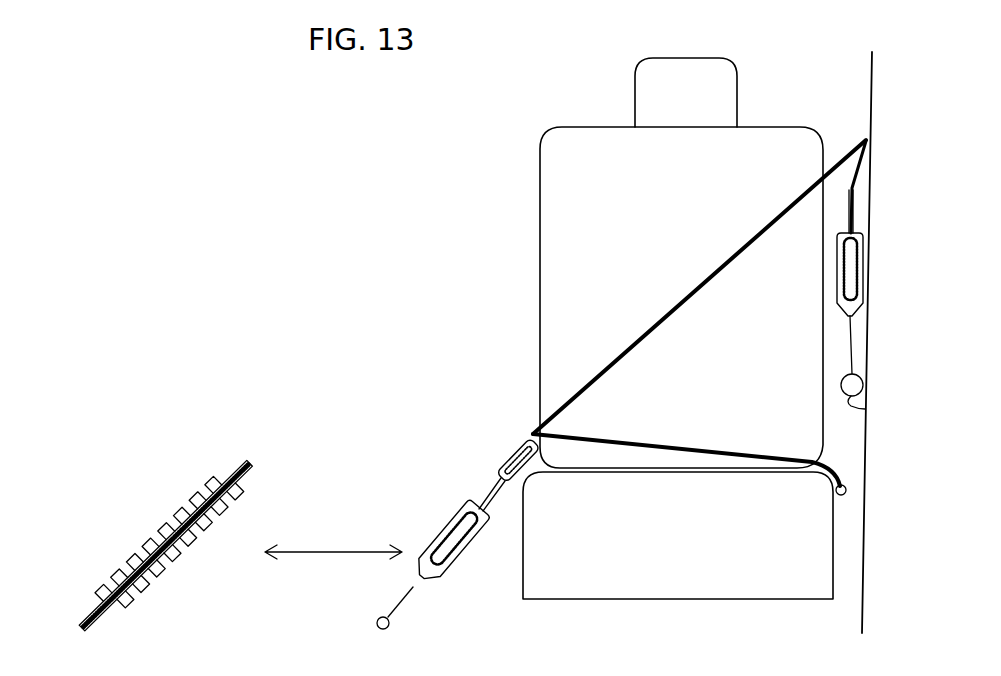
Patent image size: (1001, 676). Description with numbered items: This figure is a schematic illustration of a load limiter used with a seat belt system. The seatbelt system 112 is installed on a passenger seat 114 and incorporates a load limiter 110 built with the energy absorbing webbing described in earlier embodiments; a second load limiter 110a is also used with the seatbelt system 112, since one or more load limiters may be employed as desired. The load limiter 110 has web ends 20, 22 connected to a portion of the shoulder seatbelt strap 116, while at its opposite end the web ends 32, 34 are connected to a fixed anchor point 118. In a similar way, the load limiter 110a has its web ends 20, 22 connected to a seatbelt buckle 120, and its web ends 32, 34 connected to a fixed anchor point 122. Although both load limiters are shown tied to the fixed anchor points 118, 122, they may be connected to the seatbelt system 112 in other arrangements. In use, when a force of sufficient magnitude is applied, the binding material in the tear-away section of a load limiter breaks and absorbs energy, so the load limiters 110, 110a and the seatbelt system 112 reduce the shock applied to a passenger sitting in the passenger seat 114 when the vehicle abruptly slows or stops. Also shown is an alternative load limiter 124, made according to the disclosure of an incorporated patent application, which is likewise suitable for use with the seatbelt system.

The seatbelt system 112 is at (496, 290).
The passenger seat 114 is at (541, 180).
The shoulder seatbelt strap 116 is at (870, 151).
The web end 20 is at (851, 203).
The web end 22 is at (851, 201).
The load limiter 110 is at (877, 262).
The load limiter 110a is at (434, 515).
The web end 32 is at (849, 367).
The web end 34 is at (853, 372).
The fixed anchor point 118 is at (865, 409).
The seatbelt buckle 120 is at (514, 456).
The fixed anchor point 122 is at (378, 628).
The load limiter 124 is at (126, 517).